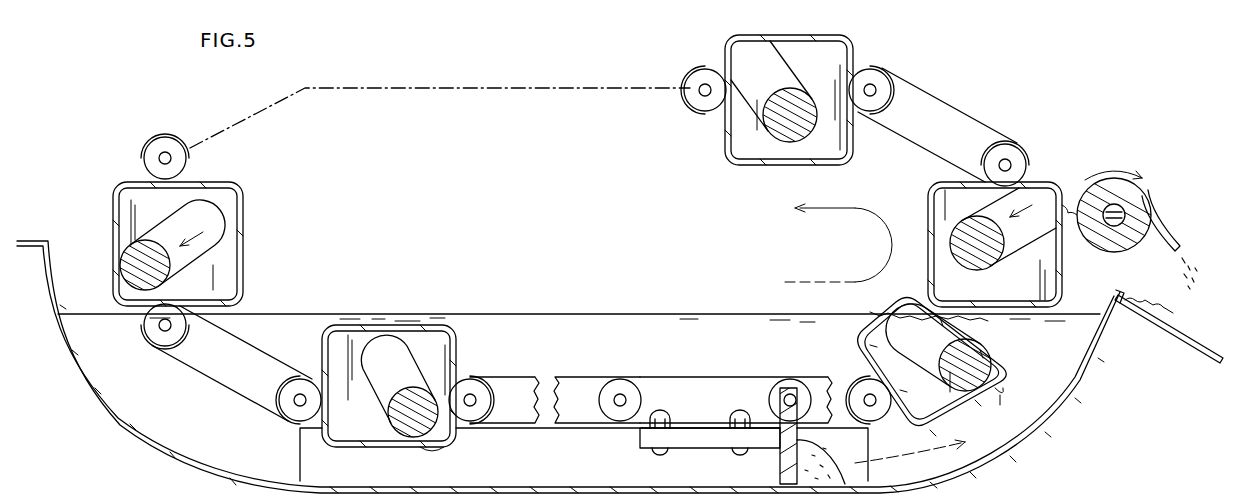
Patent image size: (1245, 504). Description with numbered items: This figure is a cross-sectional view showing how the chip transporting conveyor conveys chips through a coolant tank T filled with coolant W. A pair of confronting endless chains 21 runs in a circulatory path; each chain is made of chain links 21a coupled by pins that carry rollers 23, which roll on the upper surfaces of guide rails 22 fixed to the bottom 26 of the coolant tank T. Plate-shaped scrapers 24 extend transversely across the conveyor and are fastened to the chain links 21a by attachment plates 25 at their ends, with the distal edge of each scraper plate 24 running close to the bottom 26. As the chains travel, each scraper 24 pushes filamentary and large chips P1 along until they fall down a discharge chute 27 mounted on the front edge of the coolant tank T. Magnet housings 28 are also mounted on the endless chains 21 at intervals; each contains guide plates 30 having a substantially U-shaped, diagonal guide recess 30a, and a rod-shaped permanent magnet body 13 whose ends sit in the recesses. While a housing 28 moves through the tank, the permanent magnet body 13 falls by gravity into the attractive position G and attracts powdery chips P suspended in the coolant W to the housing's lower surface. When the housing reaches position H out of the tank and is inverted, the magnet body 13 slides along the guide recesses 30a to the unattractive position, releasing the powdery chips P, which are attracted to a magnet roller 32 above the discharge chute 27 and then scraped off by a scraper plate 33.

The permanent magnet body 13 is at (772, 103).
The endless chain 21 is at (455, 86).
The chain link 21a is at (520, 377).
The guide rail 22 is at (300, 452).
The roller 23 is at (308, 370).
The scraper plate 24 is at (780, 470).
The attachment plate 25 is at (694, 448).
The bottom 26 is at (586, 485).
The discharge chute 27 is at (1214, 348).
The magnet housing 28 is at (850, 62).
The guide plate 30 is at (847, 123).
The guide recess 30a is at (791, 64).
The magnet roller 32 is at (1126, 245).
The scraper plate 33 is at (1175, 230).
The position H is at (925, 205).
The attractive position G is at (400, 318).
The powdery chips P is at (1068, 198).
The filamentary and large chips P1 is at (822, 462).
The coolant tank T is at (570, 372).
The coolant W is at (588, 312).